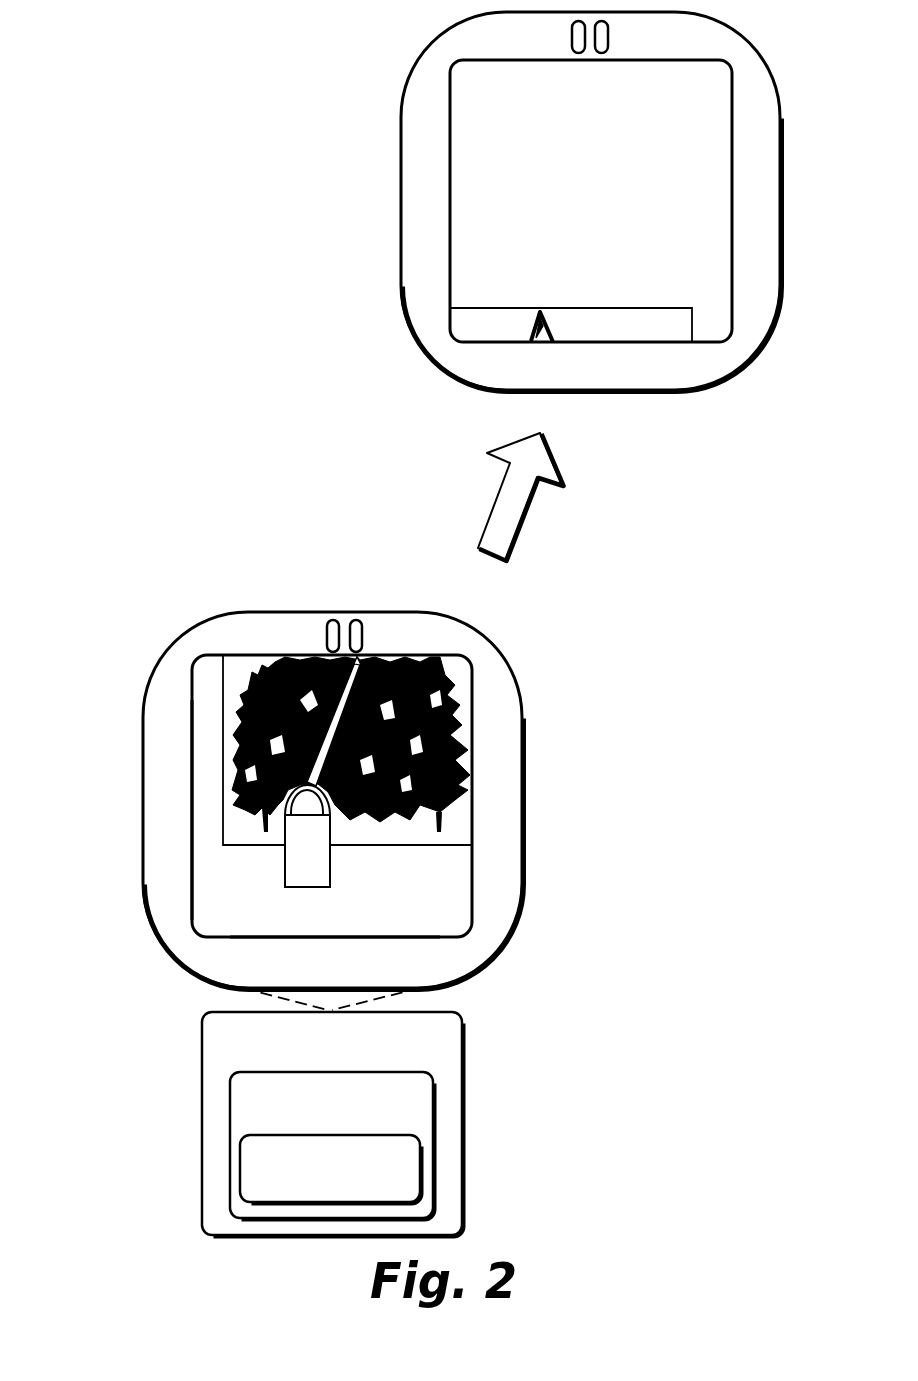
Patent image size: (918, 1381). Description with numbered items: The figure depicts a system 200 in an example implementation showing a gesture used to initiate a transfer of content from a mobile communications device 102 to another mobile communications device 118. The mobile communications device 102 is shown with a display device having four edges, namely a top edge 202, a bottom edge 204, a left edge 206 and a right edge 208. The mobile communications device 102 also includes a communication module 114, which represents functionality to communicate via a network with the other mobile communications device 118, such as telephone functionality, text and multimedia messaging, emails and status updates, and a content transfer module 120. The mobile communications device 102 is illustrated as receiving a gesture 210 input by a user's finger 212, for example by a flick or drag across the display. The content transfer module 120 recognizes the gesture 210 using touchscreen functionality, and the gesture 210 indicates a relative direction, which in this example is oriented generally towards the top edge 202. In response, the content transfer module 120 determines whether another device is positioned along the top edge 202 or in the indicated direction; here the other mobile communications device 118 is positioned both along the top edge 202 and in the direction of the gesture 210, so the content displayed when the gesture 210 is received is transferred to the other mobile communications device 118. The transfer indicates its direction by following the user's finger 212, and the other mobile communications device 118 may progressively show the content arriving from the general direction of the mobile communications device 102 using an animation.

The system 200 is at (165, 65).
The mobile communications device 102 is at (143, 794).
The communication module 114 is at (332, 1146).
The other mobile communications device 118 is at (401, 196).
The content transfer module 120 is at (331, 1169).
The top edge 202 is at (303, 655).
The bottom edge 204 is at (300, 938).
The left edge 206 is at (192, 903).
The right edge 208 is at (471, 897).
The gesture 210 is at (357, 654).
The user's finger 212 is at (307, 836).